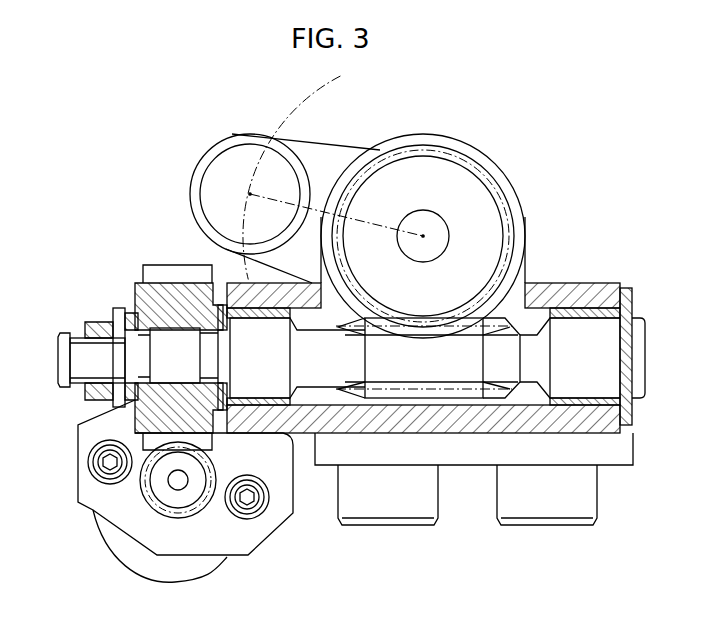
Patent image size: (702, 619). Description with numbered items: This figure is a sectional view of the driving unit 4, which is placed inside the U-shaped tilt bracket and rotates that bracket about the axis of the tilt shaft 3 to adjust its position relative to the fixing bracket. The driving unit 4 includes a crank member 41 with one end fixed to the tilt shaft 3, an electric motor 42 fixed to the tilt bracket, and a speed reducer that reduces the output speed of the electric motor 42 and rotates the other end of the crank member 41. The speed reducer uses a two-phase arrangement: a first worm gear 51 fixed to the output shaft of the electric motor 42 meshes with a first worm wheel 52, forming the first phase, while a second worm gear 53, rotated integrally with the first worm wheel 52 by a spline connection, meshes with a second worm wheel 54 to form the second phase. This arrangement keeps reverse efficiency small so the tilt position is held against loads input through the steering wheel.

The tilt shaft 3 is at (223, 162).
The driving unit 4 is at (314, 497).
The crank member 41 is at (322, 150).
The electric motor 42 is at (190, 563).
The first worm gear 51 is at (150, 490).
The first worm wheel 52 is at (147, 290).
The second worm gear 53 is at (433, 392).
The second worm wheel 54 is at (495, 187).